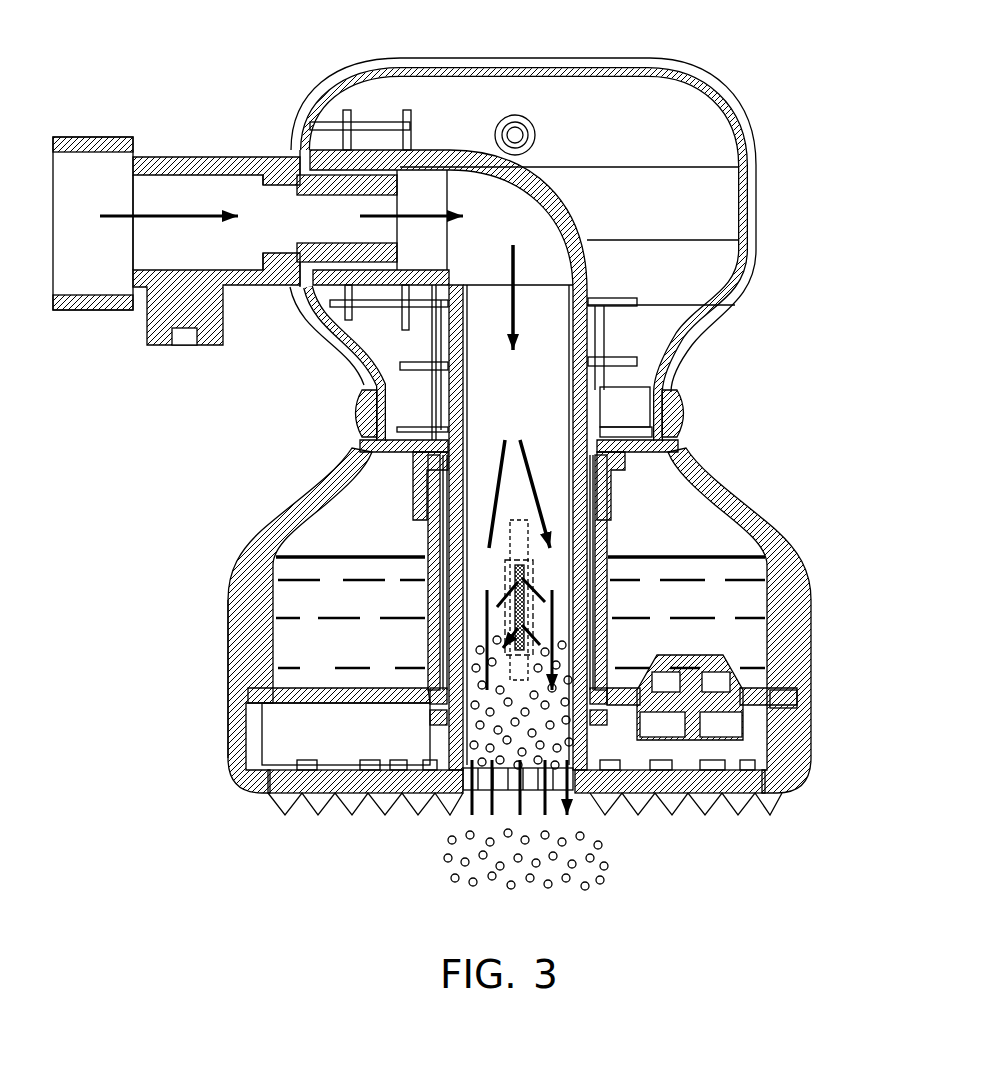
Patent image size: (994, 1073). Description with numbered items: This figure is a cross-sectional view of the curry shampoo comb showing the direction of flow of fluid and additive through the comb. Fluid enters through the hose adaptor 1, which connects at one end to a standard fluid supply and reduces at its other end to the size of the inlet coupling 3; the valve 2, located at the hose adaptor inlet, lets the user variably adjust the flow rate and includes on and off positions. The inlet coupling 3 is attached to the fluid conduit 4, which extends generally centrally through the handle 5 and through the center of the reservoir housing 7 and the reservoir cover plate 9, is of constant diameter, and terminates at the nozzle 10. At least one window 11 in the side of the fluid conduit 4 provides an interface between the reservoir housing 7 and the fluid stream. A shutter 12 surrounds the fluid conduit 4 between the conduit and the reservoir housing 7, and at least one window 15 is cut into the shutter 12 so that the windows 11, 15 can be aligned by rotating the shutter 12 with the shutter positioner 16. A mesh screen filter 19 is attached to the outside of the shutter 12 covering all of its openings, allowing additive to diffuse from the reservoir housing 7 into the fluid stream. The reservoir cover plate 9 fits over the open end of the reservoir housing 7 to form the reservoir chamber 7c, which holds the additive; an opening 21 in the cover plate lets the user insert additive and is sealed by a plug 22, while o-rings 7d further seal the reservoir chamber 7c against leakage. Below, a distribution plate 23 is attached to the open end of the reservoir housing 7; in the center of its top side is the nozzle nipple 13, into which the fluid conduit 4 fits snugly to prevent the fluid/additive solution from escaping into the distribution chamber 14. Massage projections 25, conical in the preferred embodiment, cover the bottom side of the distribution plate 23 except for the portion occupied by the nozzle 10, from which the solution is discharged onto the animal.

The hose adaptor 1 is at (184, 157).
The valve 2 is at (183, 335).
The inlet coupling 3 is at (318, 178).
The fluid conduit 4 is at (585, 430).
The handle 5 is at (702, 70).
The reservoir housing 7 is at (745, 545).
The reservoir chamber 7c is at (327, 602).
The o-rings 7d is at (428, 745).
The reservoir cover plate 9 is at (290, 700).
The nozzle 10 is at (588, 800).
The window 11 is at (513, 575).
The shutter 12 is at (600, 540).
The nozzle nipple 13 is at (455, 765).
The distribution chamber 14 is at (247, 775).
The window 15 is at (517, 520).
The shutter positioner 16 is at (366, 410).
The mesh screen filter 19 is at (520, 585).
The opening 21 is at (783, 690).
The plug 22 is at (738, 728).
The distribution plate 23 is at (278, 790).
The massage projections 25 is at (358, 812).